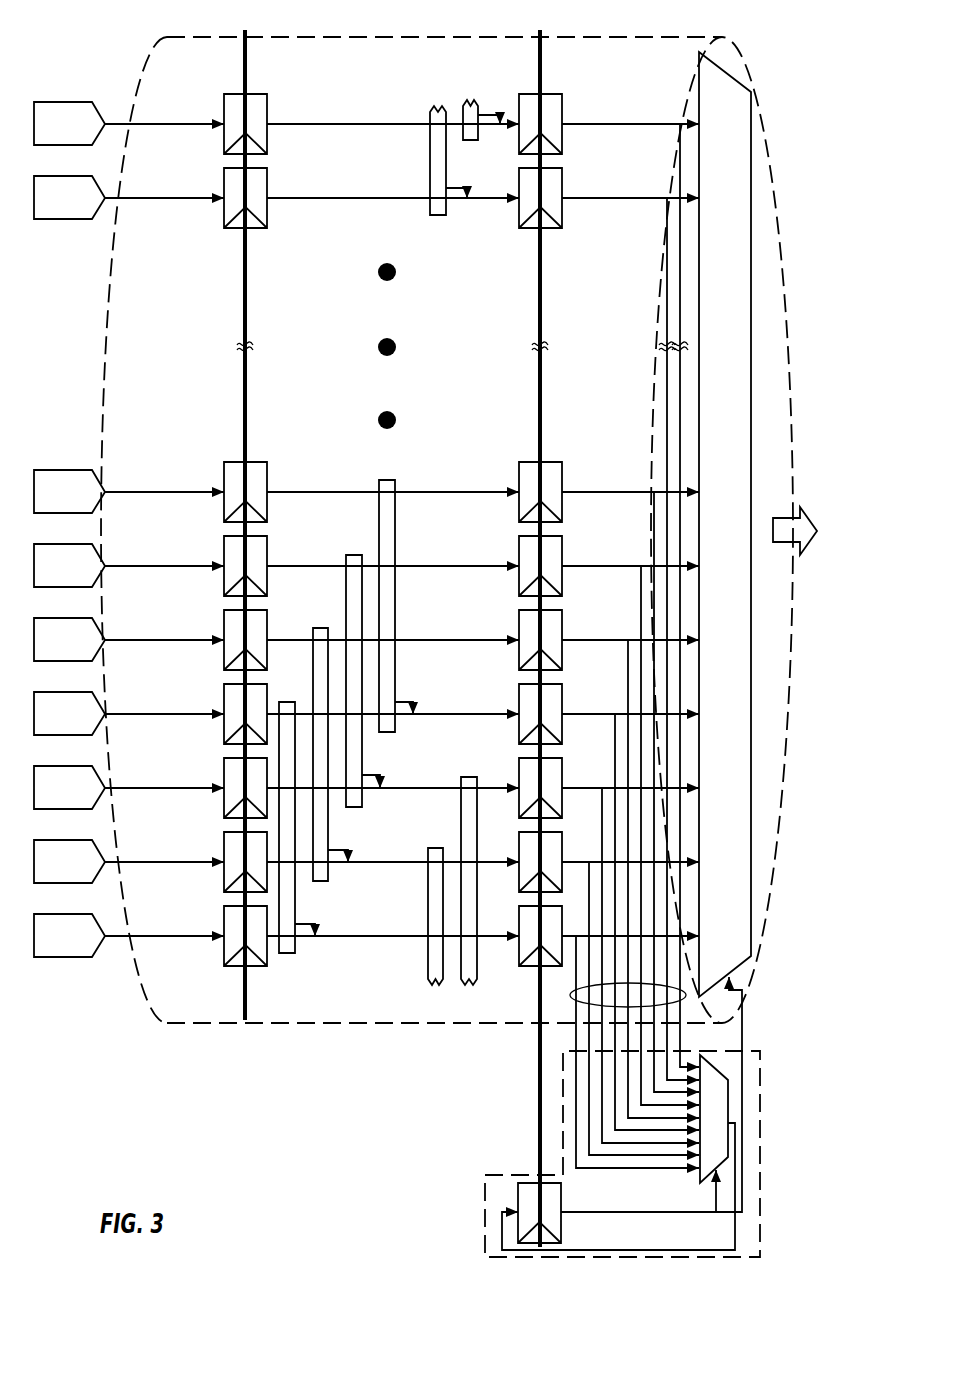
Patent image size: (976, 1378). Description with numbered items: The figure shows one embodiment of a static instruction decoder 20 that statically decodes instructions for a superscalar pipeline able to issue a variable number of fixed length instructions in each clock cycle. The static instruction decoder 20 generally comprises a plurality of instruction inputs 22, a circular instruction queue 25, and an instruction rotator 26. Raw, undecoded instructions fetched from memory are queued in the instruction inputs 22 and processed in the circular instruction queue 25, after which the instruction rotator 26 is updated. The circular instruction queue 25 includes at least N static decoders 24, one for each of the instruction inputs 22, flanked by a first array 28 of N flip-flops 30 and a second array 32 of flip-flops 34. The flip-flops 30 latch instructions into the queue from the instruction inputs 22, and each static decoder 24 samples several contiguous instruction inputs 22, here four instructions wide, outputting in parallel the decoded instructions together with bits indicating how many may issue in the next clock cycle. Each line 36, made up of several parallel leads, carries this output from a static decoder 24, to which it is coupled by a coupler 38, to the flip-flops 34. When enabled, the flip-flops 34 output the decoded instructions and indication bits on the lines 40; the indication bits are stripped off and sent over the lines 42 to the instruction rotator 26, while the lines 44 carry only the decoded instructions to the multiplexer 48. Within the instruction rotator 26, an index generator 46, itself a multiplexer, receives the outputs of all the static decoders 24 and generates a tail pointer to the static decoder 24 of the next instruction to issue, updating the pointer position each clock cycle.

The static instruction decoder 20 is at (108, 77).
The instruction inputs 22 is at (47, 145).
The static decoder 24 is at (468, 141).
The circular instruction queue 25 is at (766, 146).
The instruction rotator 26 is at (484, 1220).
The first array 28 is at (249, 348).
The flip-flops 30 is at (223, 94).
The second array 32 is at (534, 347).
The flip-flops 34 is at (537, 97).
The line 36 is at (363, 123).
The coupler 38 is at (499, 112).
The lines 40 is at (596, 121).
The lines 42 is at (570, 993).
The lines 44 is at (686, 121).
The index generator 46 is at (742, 1107).
The multiplexer 48 is at (736, 70).